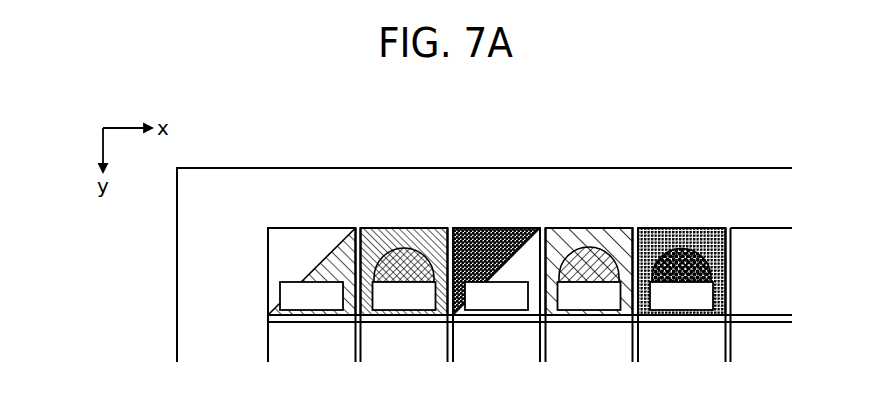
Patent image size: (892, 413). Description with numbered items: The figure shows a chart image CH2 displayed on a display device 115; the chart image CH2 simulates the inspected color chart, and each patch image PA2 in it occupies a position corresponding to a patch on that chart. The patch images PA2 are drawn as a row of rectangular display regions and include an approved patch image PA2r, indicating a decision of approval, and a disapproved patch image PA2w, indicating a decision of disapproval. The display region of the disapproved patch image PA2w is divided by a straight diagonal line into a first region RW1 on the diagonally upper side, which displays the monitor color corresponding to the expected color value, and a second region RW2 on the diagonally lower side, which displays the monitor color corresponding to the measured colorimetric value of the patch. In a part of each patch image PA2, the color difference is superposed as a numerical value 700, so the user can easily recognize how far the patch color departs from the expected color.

The display device 115 is at (218, 151).
The patch image PA2 is at (563, 214).
The approved patch image PA2r is at (412, 214).
The disapproved patch image PA2w is at (253, 235).
The chart image CH2 is at (693, 214).
The first region RW1 is at (283, 258).
The second region RW2 is at (320, 264).
The numerical value 700 is at (504, 336).